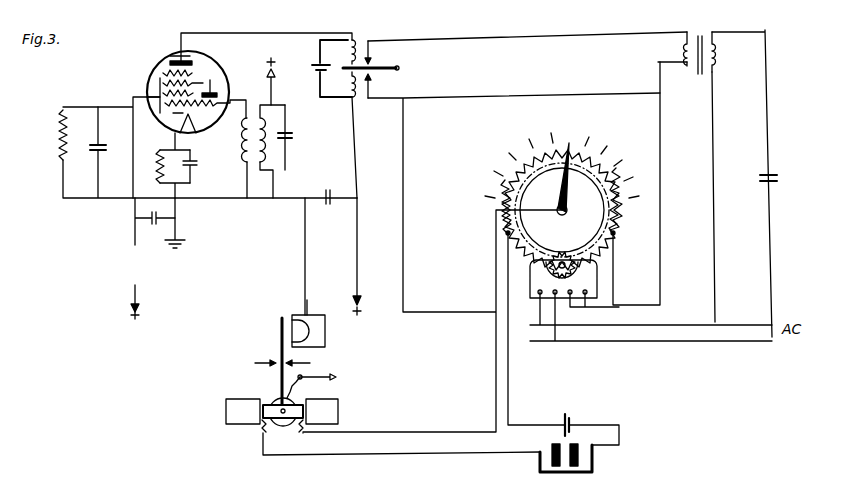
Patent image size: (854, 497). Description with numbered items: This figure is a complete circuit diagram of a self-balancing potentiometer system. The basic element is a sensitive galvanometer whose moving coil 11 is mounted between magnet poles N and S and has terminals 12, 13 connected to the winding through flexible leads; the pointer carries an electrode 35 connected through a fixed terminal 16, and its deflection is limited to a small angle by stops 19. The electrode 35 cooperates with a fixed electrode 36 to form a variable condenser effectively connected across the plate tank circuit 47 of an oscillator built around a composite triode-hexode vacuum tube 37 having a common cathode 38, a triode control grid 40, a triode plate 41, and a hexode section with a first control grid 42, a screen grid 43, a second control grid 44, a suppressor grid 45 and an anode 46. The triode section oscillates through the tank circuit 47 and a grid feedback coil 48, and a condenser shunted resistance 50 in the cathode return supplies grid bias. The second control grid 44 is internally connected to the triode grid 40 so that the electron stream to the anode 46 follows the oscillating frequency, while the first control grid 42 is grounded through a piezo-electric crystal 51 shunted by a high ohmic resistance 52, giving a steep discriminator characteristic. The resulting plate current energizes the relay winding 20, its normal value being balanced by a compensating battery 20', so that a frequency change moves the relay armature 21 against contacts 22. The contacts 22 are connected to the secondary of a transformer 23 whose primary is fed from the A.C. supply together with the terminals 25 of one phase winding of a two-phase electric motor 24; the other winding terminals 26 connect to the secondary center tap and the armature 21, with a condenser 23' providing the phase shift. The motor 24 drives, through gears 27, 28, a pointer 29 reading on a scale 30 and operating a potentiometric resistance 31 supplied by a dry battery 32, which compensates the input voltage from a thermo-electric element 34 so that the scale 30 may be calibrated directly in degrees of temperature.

The moving coil 11 is at (294, 427).
The terminal 12 is at (263, 433).
The terminal 13 is at (302, 434).
The fixed terminal 16 is at (313, 375).
The stops 19 is at (290, 361).
The relay winding 20 is at (367, 105).
The compensating battery 20' is at (320, 68).
The relay armature 21 is at (382, 67).
The relay contacts 22 is at (371, 45).
The transformer 23 is at (703, 37).
The condenser 23' is at (779, 166).
The two-phase electric motor 24 is at (598, 268).
The terminals 25 is at (585, 289).
The terminals 26 is at (540, 289).
The gear 27 is at (543, 258).
The gear 28 is at (523, 248).
The pointer 29 is at (575, 170).
The scale 30 is at (570, 132).
The potentiometric resistance 31 is at (502, 182).
The dry battery 32 is at (569, 420).
The thermo-electric element 34 is at (556, 472).
The electrode 35 is at (280, 326).
The fixed electrode 36 is at (355, 310).
The triode-hexode vacuum tube 37 is at (197, 44).
The common cathode 38 is at (244, 134).
The triode control grid 40 is at (218, 99).
The triode plate 41 is at (213, 89).
The first control grid 42 is at (174, 112).
The screen grid 43 is at (163, 91).
The second control grid 44 is at (166, 74).
The suppressor grid 45 is at (169, 54).
The anode 46 is at (180, 58).
The plate tank circuit 47 is at (272, 114).
The grid feedback coil 48 is at (257, 150).
The condenser shunted resistance 50 is at (158, 160).
The piezo-electric crystal 51 is at (100, 145).
The high ohmic resistance 52 is at (60, 148).